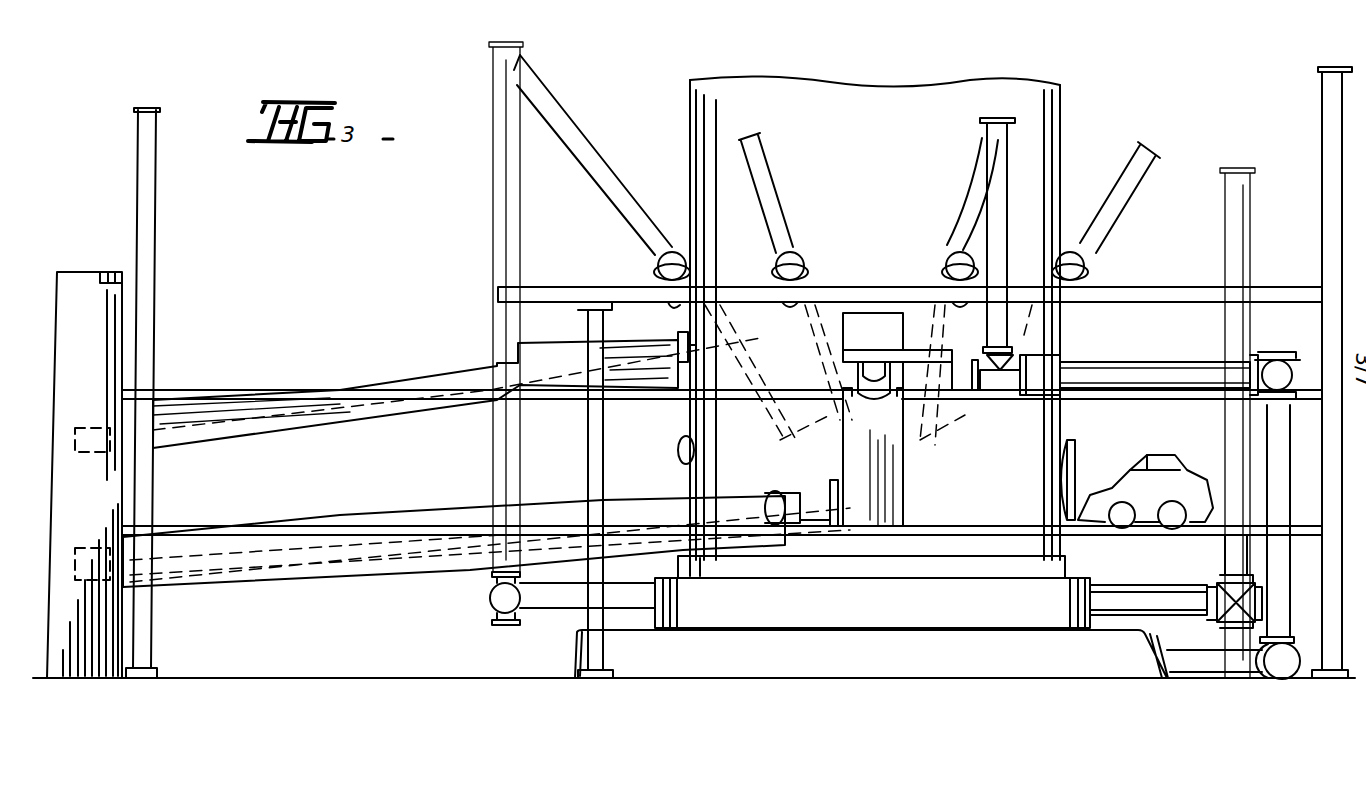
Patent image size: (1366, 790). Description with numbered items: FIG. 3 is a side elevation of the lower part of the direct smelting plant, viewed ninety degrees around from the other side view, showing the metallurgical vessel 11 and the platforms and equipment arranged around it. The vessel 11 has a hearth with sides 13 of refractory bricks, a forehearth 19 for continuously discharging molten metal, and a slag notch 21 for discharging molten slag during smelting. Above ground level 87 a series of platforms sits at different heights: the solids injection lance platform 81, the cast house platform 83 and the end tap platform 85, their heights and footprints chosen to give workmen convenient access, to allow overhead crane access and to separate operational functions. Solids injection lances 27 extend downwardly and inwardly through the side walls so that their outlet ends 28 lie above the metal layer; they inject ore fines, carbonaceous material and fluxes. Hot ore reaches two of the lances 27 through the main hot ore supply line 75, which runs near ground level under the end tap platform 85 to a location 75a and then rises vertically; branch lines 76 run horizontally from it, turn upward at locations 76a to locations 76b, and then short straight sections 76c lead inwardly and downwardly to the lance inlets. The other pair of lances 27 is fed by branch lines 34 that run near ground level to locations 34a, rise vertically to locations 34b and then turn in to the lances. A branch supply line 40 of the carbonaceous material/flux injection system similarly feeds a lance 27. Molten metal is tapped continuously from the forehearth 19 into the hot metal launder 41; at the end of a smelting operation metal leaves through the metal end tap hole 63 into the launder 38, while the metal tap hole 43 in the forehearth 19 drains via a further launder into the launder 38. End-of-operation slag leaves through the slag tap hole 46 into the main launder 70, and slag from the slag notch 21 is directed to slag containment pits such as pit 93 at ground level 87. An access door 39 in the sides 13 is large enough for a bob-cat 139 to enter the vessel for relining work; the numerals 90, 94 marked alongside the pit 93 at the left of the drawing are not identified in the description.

The metallurgical vessel 11 is at (890, 140).
The sides of the hearth 13 is at (1045, 425).
The forehearth 19 is at (880, 500).
The slag notch 21 is at (696, 345).
The solids injection lances 27 is at (655, 265).
The outlet ends of the lances 28 is at (868, 386).
The branch lines 34 is at (1243, 226).
The locations 34a is at (496, 602).
The locations 34b is at (488, 58).
The launder 38 is at (355, 560).
The access door 39 is at (1060, 476).
The branch supply line 40 is at (786, 207).
The hot metal launder 41 is at (465, 380).
The metal tap hole 43 is at (840, 490).
The slag tap hole 46 is at (682, 450).
The metal end tap hole 63 is at (770, 500).
The main launder 70 is at (555, 495).
The main hot ore supply line 75 is at (1280, 418).
The location 75a is at (1280, 662).
The branch lines 76 is at (1135, 362).
The locations 76a is at (1010, 212).
The locations 76b is at (1010, 152).
The short straight sections 76c is at (975, 196).
The solids injection lance platform 81 is at (540, 285).
The cast house platform 83 is at (197, 397).
The end tap platform 85 is at (178, 526).
The ground level 87 is at (952, 682).
The wall 90 is at (86, 438).
The slag containment pit 93 is at (86, 438).
The wall 94 is at (78, 315).
The bob-cat 139 is at (1150, 470).